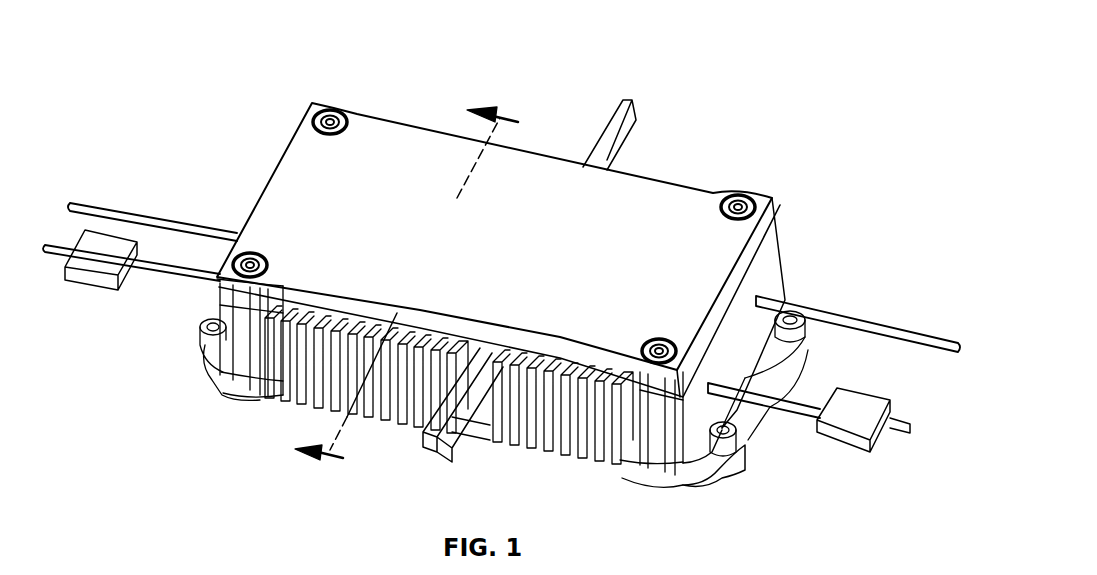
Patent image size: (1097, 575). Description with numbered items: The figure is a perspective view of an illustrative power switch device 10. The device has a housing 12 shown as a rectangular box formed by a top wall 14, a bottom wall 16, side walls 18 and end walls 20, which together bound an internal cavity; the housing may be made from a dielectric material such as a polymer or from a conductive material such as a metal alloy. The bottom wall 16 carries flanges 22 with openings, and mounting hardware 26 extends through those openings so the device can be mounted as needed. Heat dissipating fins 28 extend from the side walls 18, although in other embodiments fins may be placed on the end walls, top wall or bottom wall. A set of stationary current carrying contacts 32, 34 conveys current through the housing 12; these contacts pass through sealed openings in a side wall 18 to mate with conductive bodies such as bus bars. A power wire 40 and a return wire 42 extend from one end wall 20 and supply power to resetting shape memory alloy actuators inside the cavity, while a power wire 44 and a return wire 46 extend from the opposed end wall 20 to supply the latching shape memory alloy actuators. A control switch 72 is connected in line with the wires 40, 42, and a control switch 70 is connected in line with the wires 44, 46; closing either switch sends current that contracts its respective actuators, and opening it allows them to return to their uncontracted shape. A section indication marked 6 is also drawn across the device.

The section line 6- 6 is at (399, 283).
The power switch device 10 is at (725, 62).
The housing 12 is at (782, 248).
The top wall 14 is at (303, 152).
The bottom wall 16 is at (488, 433).
The side walls 18 is at (460, 360).
The end walls 20 is at (770, 280).
The flanges 22 is at (712, 467).
The mounting hardware 26 is at (748, 437).
The heat dissipating fins 28 is at (327, 408).
The stationary current carrying contact 32 is at (607, 123).
The stationary current carrying contact 34 is at (433, 462).
The power wire 40 is at (170, 283).
The return wire 42 is at (145, 213).
The power wire 44 is at (795, 400).
The return wire 46 is at (860, 322).
The control switch 70 is at (860, 443).
The control switch 72 is at (77, 277).